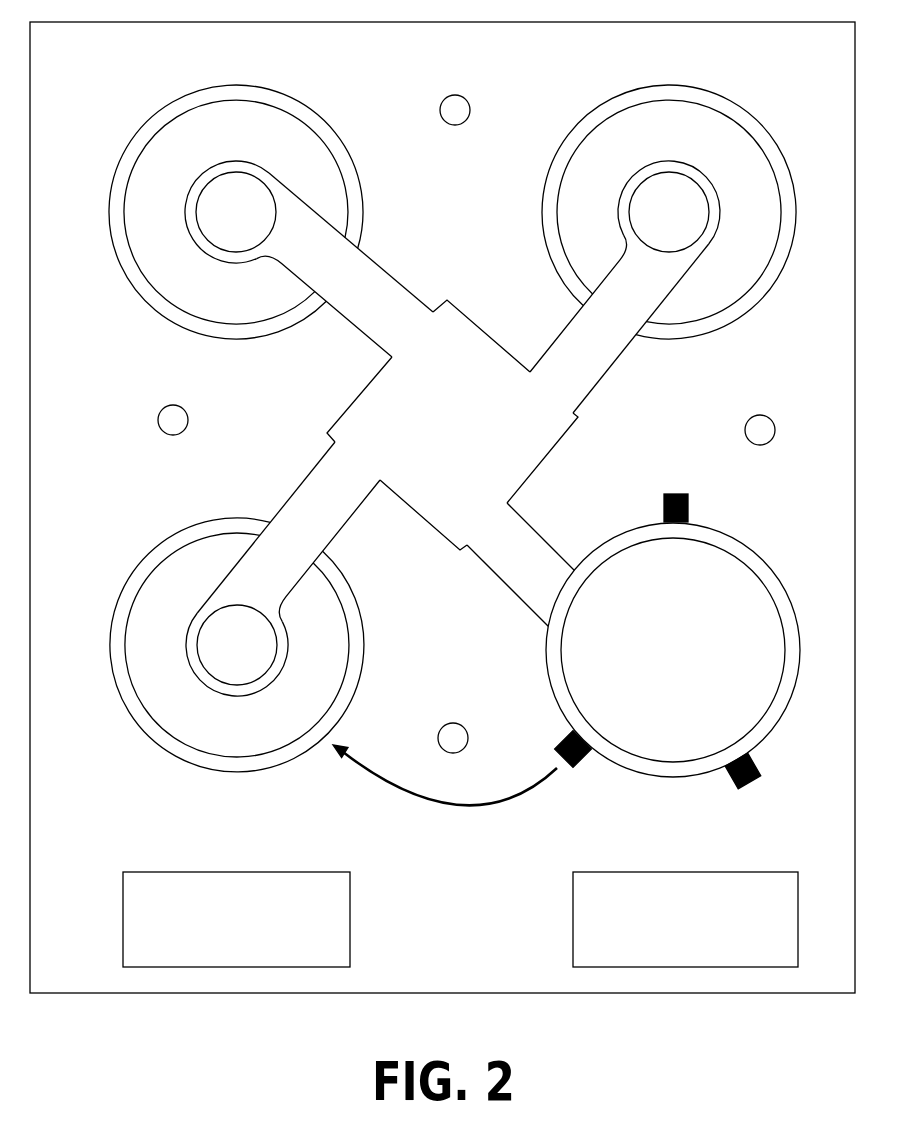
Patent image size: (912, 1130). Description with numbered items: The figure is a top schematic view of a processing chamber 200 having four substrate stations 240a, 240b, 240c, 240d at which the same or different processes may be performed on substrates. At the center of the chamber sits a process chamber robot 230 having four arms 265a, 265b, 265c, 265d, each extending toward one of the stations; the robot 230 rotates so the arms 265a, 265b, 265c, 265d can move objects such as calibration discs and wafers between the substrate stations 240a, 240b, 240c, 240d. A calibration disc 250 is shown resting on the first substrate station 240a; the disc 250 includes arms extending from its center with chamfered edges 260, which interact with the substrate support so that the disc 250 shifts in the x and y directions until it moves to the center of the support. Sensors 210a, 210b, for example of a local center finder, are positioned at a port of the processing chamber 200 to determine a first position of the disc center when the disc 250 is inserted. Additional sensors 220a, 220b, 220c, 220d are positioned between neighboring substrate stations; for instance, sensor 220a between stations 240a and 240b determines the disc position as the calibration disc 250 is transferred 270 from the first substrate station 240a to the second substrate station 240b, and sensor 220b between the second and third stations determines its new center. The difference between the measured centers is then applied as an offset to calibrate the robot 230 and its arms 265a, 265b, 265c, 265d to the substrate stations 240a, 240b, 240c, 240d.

The processing chamber 200 is at (68, 58).
The sensor 210a is at (662, 931).
The sensor 210b is at (212, 931).
The sensor 220a is at (462, 726).
The sensor 220b is at (171, 436).
The sensor 220c is at (466, 127).
The sensor 220d is at (773, 447).
The process chamber robot 230 is at (436, 439).
The substrate station 240a is at (665, 790).
The substrate station 240b is at (158, 758).
The substrate station 240c is at (287, 93).
The substrate station 240d is at (738, 95).
The calibration disc 250 is at (653, 661).
The chamfered edges 260 is at (667, 493).
The arm 265a is at (502, 587).
The arm 265b is at (290, 480).
The arm 265c is at (360, 322).
The arm 265d is at (570, 332).
The transfer 270 is at (478, 820).